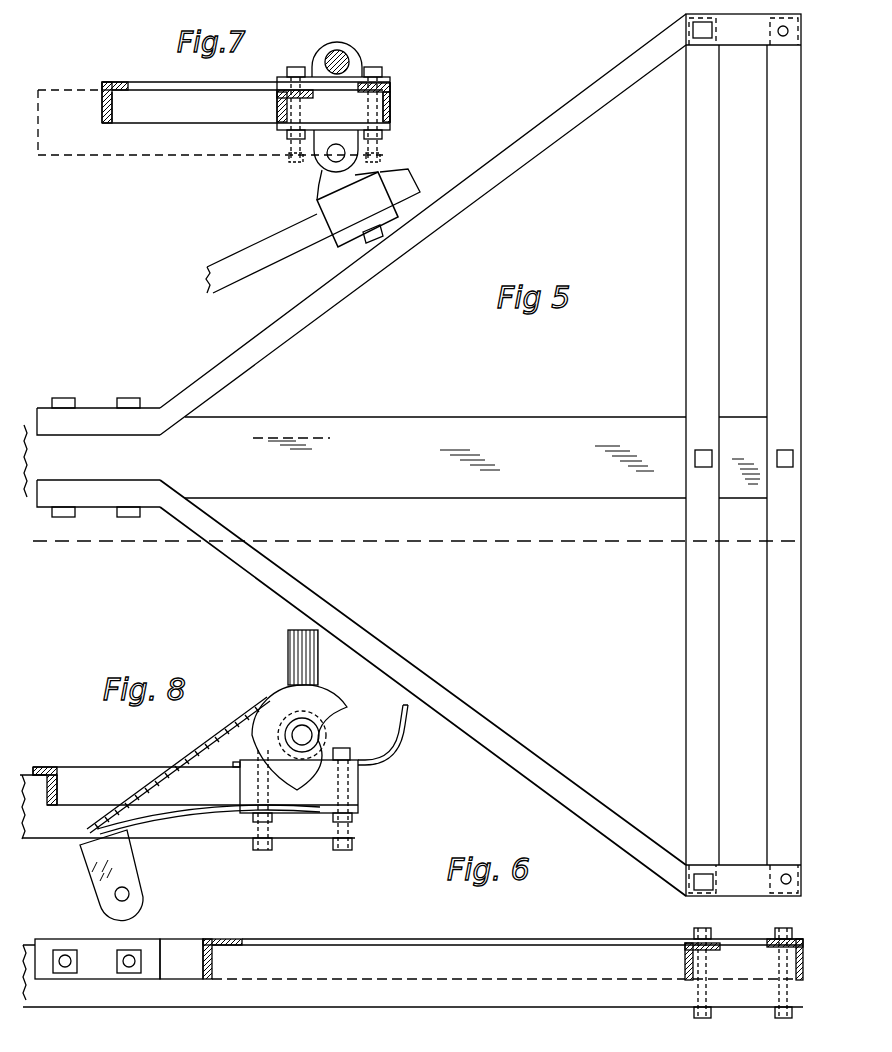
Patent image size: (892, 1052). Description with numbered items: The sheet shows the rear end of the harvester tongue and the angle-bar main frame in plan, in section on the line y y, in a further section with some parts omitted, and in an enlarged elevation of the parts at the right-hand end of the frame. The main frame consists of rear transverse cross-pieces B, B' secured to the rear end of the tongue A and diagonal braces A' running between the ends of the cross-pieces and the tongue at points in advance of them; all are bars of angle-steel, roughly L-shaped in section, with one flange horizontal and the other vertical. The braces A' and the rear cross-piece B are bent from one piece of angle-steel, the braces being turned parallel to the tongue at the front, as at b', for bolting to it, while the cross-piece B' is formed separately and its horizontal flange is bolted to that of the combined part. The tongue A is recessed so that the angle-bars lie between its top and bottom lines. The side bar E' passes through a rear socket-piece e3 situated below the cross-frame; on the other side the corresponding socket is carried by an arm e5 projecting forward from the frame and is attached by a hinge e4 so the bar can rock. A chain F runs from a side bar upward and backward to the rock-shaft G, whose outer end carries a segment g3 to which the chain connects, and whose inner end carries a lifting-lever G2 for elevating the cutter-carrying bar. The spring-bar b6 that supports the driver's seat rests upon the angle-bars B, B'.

In FIG. 7, the tongue A is at (210, 122).
In FIG. 8, the tongue A is at (187, 825).
In FIG. 6, the tongue A is at (413, 989).
In FIG. 5, the diagonal braces A' is at (395, 455).
In FIG. 7, the diagonal braces A' is at (246, 102).
In FIG. 8, the diagonal braces A' is at (195, 775).
In FIG. 6, the diagonal braces A' is at (481, 946).
In FIG. 5, the rear cross-piece B is at (743, 455).
In FIG. 7, the rear cross-piece B is at (345, 114).
In FIG. 8, the rear cross-piece B is at (295, 799).
In FIG. 6, the rear cross-piece B is at (777, 973).
In FIG. 5, the cross-piece B' is at (671, 650).
In FIG. 7, the cross-piece B' is at (279, 106).
In FIG. 6, the cross-piece B' is at (690, 973).
In FIG. 5, the parallel portions of the braces b' is at (98, 456).
In FIG. 6, the parallel portions of the braces b' is at (97, 959).
In FIG. 8, the spring-bar b6 is at (393, 750).
In FIG. 7, the rock-shaft G is at (347, 58).
In FIG. 8, the rock-shaft G is at (312, 735).
In FIG. 8, the lifting-lever G2 is at (292, 653).
In FIG. 8, the segment g3 is at (330, 705).
In FIG. 7, the side bar E' is at (313, 231).
In FIG. 7, the socket-piece e3 is at (356, 188).
In FIG. 8, the hinge e4 is at (129, 893).
In FIG. 8, the arm e5 is at (236, 812).
In FIG. 8, the chain F is at (178, 765).
In FIG. 5, the section line y is at (425, 544).